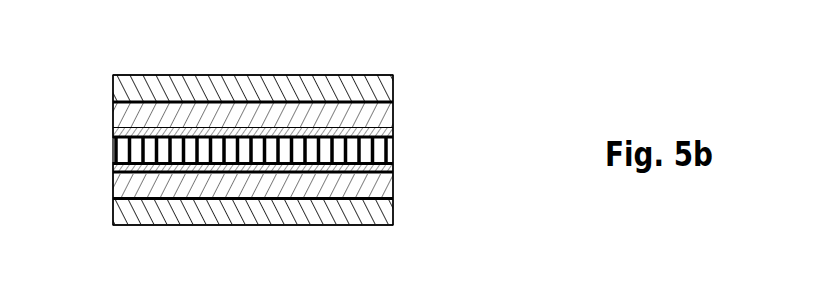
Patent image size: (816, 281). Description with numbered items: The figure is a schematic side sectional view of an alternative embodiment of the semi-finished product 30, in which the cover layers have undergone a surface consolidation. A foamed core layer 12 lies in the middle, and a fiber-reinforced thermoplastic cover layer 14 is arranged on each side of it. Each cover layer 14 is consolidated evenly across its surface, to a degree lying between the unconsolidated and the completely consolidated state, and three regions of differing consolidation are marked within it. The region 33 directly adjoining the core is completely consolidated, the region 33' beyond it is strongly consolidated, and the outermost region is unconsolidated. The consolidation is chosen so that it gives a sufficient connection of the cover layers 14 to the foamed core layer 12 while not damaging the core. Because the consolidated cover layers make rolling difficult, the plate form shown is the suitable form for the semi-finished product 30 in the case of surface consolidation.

The semi-finished product 30 is at (507, 54).
The fiber-reinforced thermoplastic cover layer 14 is at (109, 75).
The strongly consolidated region 33' is at (319, 147).
The completely consolidated region 33 is at (305, 150).
The foamed core layer 12 is at (385, 143).